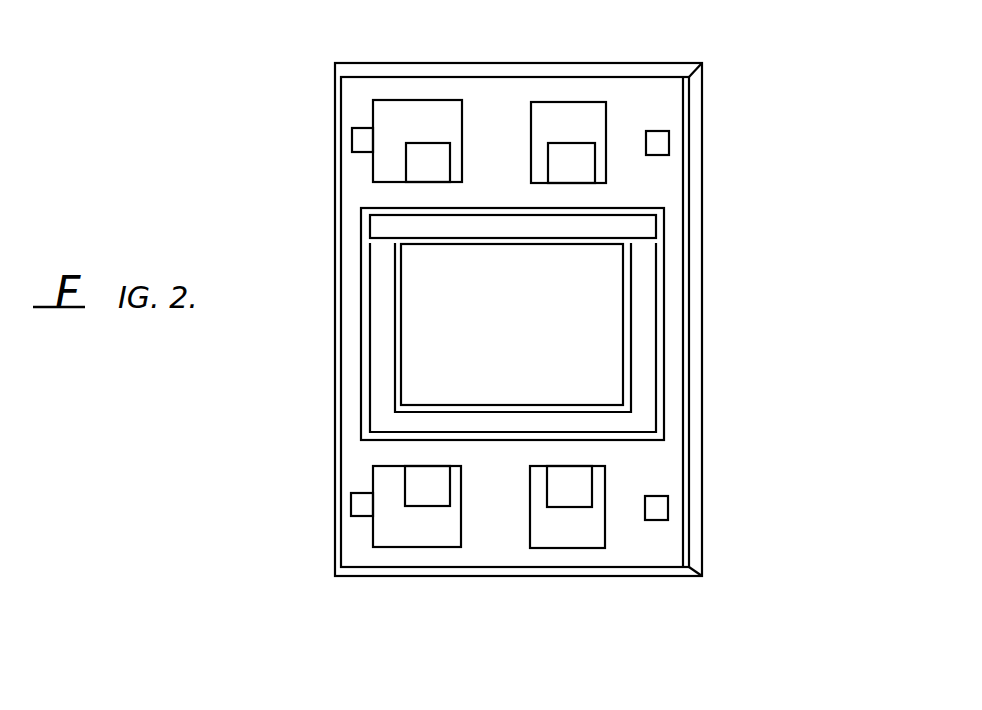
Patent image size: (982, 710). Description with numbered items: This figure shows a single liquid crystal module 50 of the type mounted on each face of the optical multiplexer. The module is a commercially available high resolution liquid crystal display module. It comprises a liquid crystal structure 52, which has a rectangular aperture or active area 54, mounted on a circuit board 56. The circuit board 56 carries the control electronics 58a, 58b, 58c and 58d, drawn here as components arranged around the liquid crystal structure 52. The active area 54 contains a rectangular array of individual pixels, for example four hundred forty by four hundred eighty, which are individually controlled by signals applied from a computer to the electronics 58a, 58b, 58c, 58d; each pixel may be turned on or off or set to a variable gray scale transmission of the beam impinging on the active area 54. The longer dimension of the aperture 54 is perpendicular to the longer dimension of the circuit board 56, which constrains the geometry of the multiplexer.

The liquid crystal module 50 is at (722, 264).
The liquid crystal structure 52 is at (362, 372).
The active area 54 is at (507, 371).
The circuit board 56 is at (498, 561).
The control electronics 58a is at (377, 528).
The control electronics 58b is at (563, 540).
The control electronics 58c is at (607, 108).
The control electronics 58d is at (383, 113).